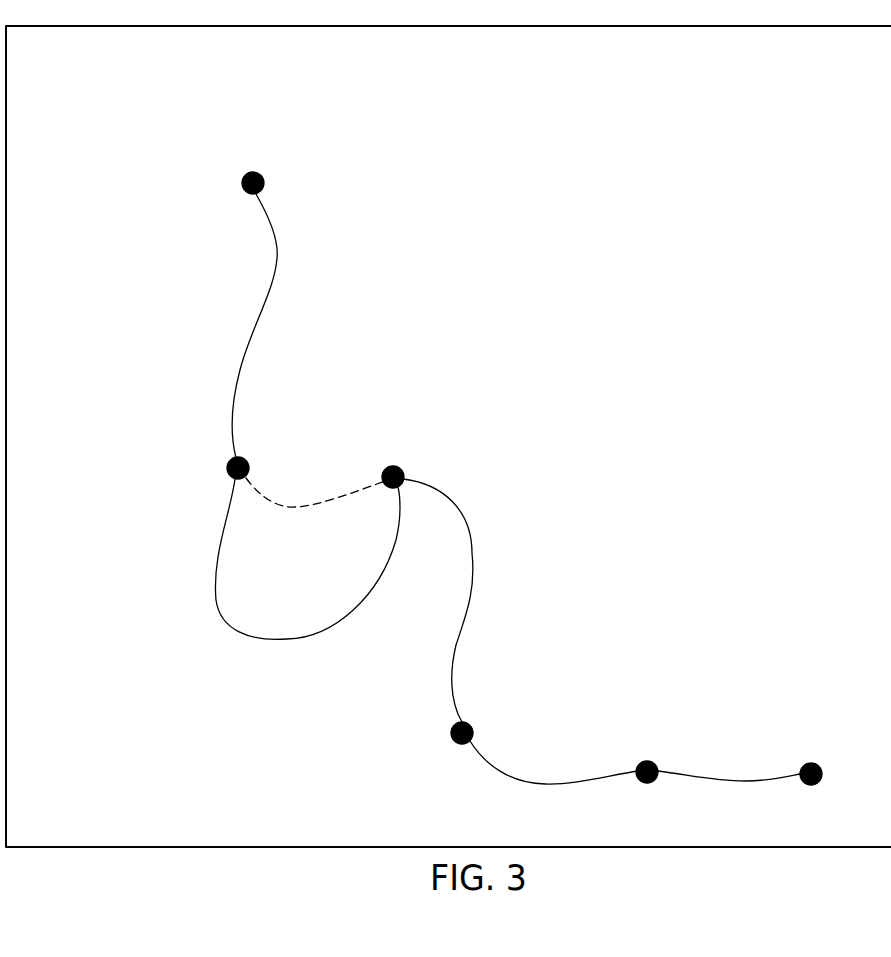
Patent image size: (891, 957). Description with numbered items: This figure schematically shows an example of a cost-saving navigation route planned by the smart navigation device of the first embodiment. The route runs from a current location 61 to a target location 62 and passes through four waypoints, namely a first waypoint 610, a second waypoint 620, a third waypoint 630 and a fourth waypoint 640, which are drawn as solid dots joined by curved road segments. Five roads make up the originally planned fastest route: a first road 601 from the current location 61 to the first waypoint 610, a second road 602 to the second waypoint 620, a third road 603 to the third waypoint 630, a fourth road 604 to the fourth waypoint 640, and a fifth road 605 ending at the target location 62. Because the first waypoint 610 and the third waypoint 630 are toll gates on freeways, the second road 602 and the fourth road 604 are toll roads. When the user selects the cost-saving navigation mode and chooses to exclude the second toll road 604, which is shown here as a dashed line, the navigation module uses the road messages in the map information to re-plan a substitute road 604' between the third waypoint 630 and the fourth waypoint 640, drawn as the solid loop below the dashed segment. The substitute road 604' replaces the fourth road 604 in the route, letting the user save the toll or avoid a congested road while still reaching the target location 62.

The current location 61 is at (815, 763).
The target location 62 is at (252, 172).
The first road 601 is at (755, 762).
The second road 602 is at (588, 762).
The third road 603 is at (493, 530).
The fourth road 604 is at (315, 430).
The substitute road 604' is at (307, 627).
The fifth road 605 is at (292, 273).
The first waypoint 610 is at (647, 761).
The second waypoint 620 is at (466, 722).
The third waypoint 630 is at (401, 467).
The fourth waypoint 640 is at (228, 474).